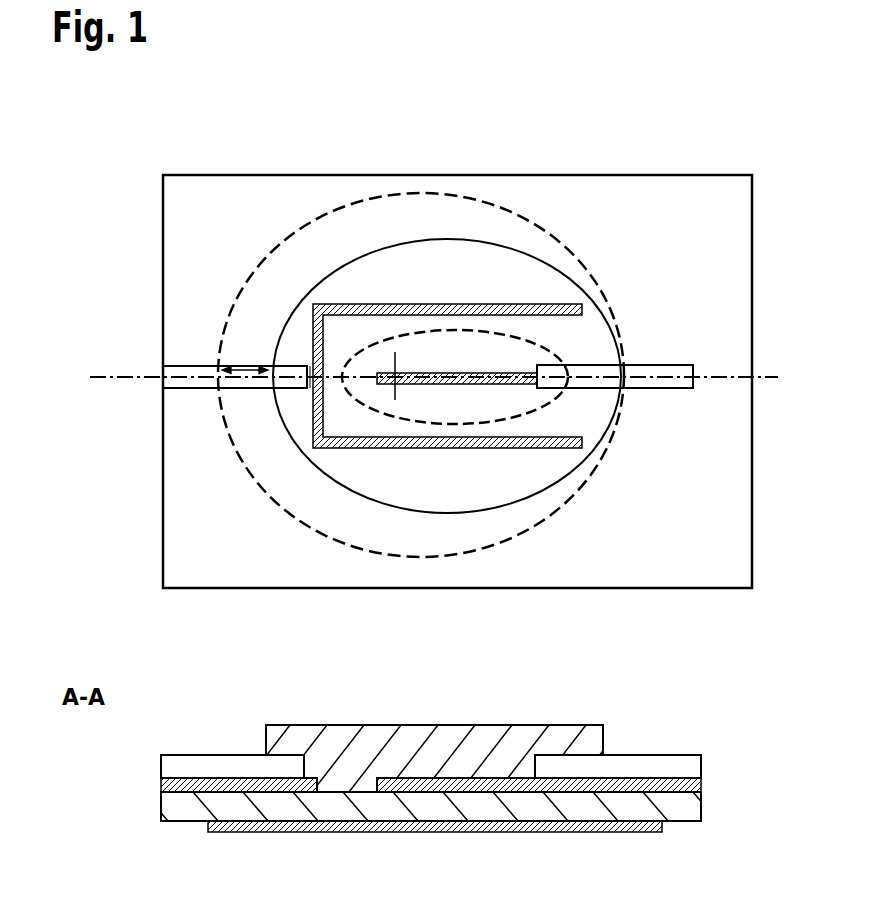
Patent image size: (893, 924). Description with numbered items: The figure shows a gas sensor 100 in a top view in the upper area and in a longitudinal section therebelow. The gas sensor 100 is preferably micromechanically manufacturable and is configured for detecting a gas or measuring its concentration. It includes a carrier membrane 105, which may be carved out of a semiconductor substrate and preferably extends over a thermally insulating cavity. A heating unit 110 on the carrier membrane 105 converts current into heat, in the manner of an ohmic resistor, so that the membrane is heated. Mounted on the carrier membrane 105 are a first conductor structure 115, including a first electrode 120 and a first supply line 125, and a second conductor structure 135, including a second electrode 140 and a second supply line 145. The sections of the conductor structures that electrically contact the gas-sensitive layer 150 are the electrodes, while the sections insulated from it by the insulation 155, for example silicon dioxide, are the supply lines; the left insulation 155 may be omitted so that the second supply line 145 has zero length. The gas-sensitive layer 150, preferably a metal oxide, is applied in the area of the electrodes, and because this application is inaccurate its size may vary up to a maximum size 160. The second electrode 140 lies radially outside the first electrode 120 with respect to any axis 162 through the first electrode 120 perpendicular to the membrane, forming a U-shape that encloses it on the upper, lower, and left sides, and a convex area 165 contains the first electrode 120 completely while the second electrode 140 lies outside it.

The gas sensor 100 is at (118, 156).
The carrier membrane 105 is at (175, 252).
The heating unit 110 is at (662, 826).
The first conductor structure 115 is at (677, 202).
The first electrode 120 is at (483, 368).
The first supply line 125 is at (642, 358).
The second conductor structure 135 is at (92, 407).
The second electrode 140 is at (300, 413).
The second supply line 145 is at (200, 396).
The gas-sensitive layer 150 is at (445, 272).
The insulation 155 is at (183, 366).
The maximum size 160 is at (288, 240).
The axis 162 is at (387, 391).
The convex area 165 is at (553, 402).